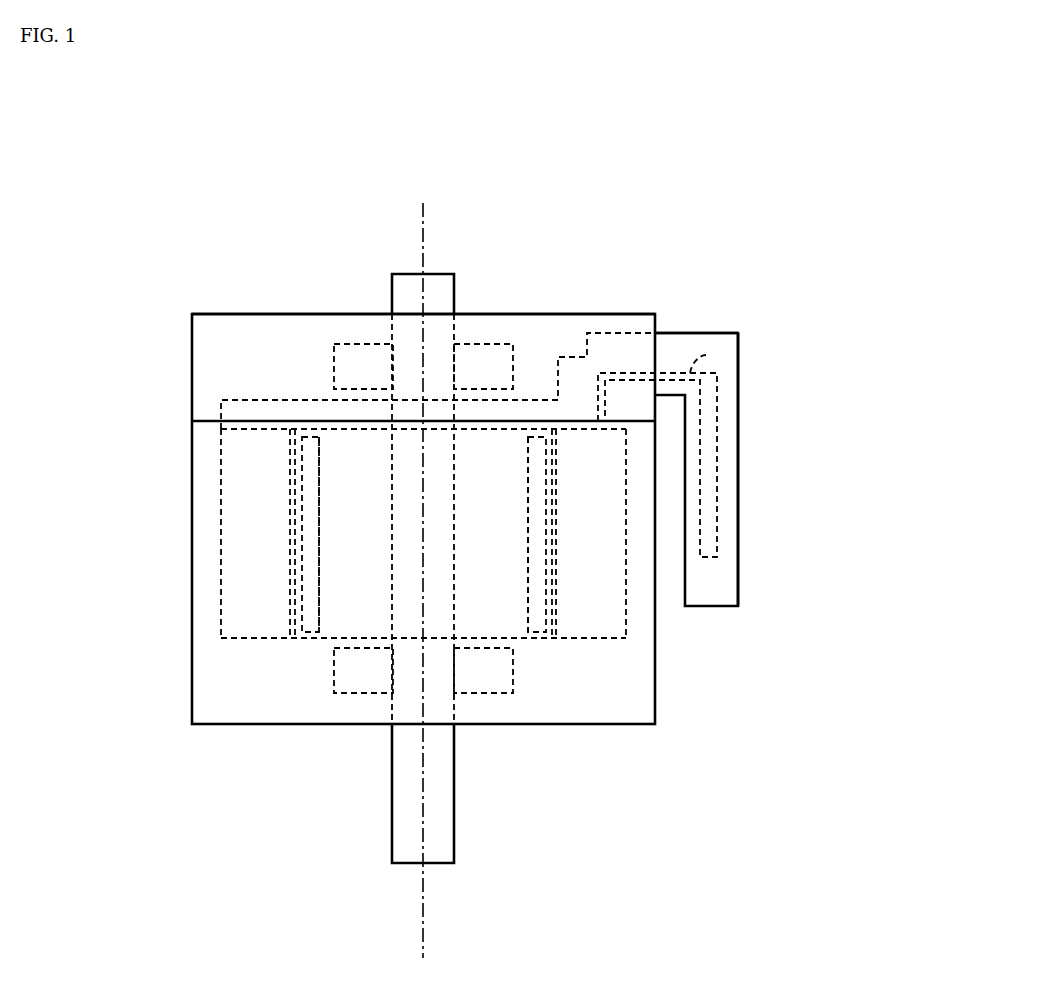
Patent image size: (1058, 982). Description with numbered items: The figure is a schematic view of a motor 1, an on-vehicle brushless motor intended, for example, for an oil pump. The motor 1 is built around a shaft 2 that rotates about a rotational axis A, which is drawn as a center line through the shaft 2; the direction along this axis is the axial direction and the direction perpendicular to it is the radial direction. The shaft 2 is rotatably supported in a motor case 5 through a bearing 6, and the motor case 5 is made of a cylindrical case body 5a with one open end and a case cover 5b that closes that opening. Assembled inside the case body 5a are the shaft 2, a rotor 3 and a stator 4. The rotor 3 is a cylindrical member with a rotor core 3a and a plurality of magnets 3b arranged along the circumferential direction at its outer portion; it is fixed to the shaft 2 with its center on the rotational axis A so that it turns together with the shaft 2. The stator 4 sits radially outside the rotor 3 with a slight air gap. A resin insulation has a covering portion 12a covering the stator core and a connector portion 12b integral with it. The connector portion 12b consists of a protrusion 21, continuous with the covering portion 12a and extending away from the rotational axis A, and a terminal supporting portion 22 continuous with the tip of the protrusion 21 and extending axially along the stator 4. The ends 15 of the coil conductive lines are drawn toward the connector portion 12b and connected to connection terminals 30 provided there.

The motor 1 is at (647, 172).
The shaft 2 is at (455, 808).
The rotor 3 is at (398, 629).
The rotor core 3a is at (328, 622).
The magnets 3b is at (308, 633).
The stator 4 is at (626, 620).
The motor case 5 is at (113, 373).
The case body 5a is at (190, 467).
The case cover 5b is at (190, 387).
The bearing 6 is at (350, 373).
The covering portion 12a is at (249, 400).
The connector portion 12b is at (760, 418).
The ends of the conductive line 15 is at (706, 355).
The protrusion 21 is at (668, 332).
The terminal supporting portion 22 is at (738, 575).
The connection terminals 30 is at (717, 483).
The rotational axis A is at (423, 232).